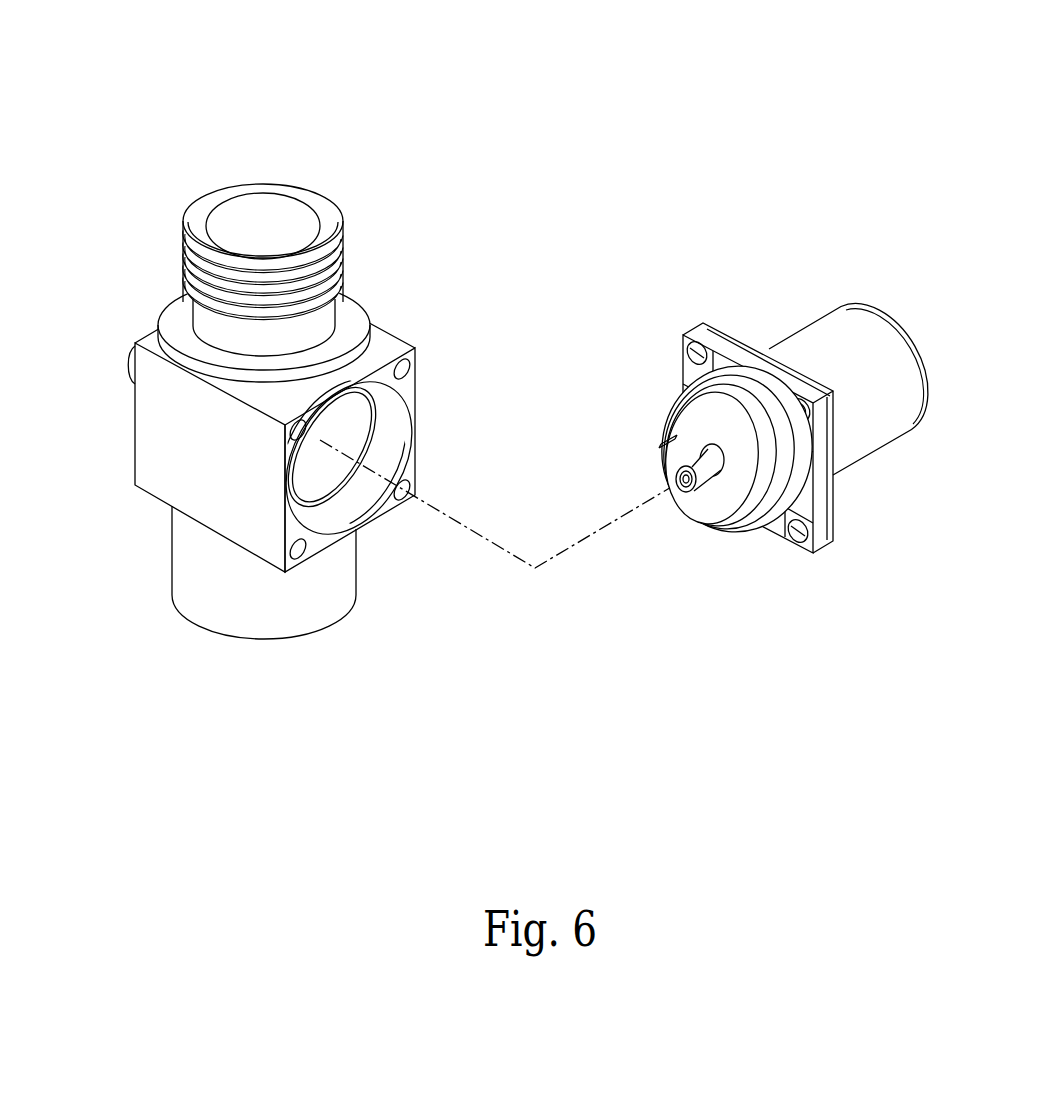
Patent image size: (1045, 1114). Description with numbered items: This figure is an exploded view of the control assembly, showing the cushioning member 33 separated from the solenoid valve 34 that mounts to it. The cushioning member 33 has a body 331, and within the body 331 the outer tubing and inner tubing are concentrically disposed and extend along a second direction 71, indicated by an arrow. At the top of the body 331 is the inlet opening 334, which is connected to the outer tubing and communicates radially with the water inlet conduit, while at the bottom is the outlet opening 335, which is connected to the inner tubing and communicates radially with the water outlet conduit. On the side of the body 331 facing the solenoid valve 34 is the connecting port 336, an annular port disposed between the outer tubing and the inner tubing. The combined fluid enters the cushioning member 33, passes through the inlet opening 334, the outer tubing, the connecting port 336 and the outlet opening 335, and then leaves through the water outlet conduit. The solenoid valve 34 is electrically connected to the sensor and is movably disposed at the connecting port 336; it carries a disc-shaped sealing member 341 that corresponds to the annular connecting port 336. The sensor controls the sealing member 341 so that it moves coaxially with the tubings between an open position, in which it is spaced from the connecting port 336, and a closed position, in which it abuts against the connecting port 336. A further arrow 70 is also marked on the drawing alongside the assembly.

The cushioning member 33 is at (594, 152).
The body 331 is at (148, 427).
The inlet opening 334 is at (268, 216).
The outlet opening 335 is at (261, 665).
The connecting port 336 is at (395, 423).
The solenoid valve 34 is at (860, 324).
The sealing member 341 is at (685, 415).
The insertion direction 70 is at (132, 212).
The second direction 71 is at (556, 750).